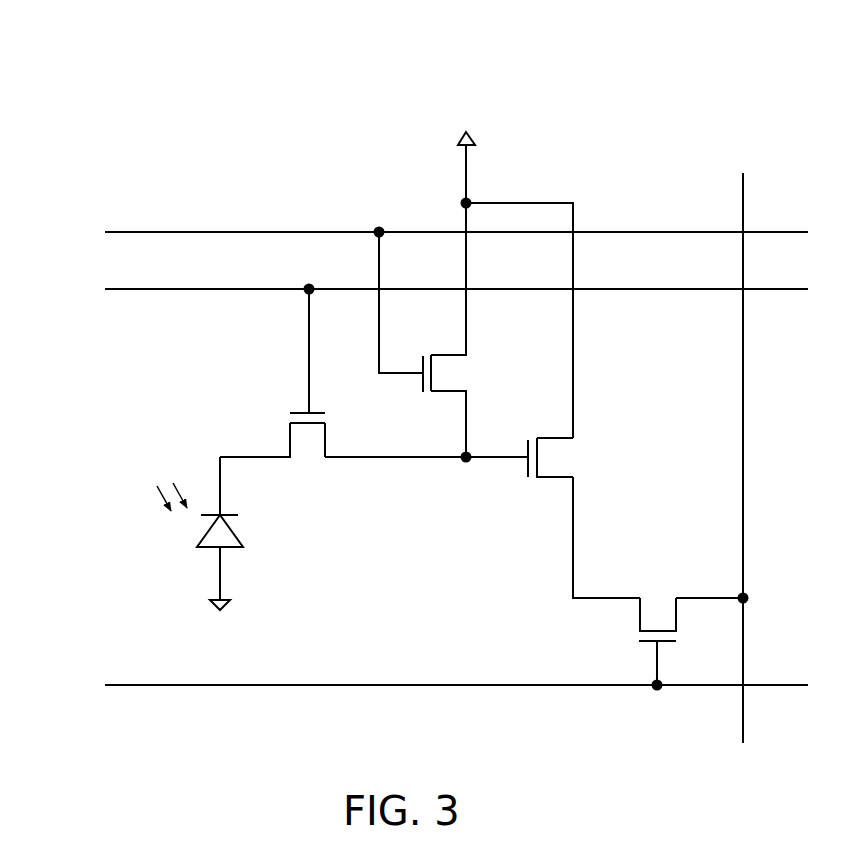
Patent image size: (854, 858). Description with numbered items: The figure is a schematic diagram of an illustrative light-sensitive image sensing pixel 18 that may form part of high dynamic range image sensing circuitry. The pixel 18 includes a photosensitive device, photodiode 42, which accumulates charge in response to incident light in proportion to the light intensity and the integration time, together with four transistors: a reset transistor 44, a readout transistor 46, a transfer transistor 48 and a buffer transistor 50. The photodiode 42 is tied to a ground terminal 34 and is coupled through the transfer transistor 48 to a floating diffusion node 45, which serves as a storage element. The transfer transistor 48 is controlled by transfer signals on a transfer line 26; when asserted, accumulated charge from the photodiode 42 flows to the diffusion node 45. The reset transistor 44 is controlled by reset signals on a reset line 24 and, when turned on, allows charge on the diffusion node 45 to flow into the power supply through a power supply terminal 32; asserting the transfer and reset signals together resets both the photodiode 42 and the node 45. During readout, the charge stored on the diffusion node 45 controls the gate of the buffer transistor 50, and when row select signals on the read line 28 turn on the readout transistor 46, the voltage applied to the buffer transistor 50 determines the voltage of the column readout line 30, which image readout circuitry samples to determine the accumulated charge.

The image sensing pixel 18 is at (122, 72).
The reset line 24 is at (166, 231).
The transfer line 26 is at (163, 291).
The read line 28 is at (165, 687).
The column readout line 30 is at (745, 206).
The power supply terminal 32 is at (476, 140).
The ground voltage VSS 34 is at (226, 606).
The photodiode 42 is at (236, 531).
The reset transistor 44 is at (451, 386).
The floating diffusion node 45 is at (468, 462).
The readout transistor 46 is at (645, 615).
The transfer transistor 48 is at (298, 440).
The buffer transistor 50 is at (554, 446).